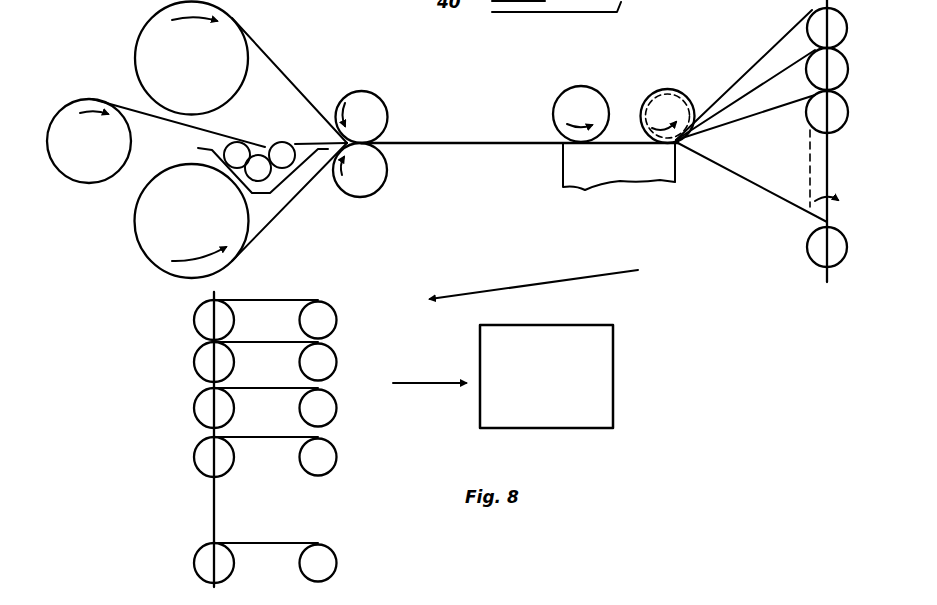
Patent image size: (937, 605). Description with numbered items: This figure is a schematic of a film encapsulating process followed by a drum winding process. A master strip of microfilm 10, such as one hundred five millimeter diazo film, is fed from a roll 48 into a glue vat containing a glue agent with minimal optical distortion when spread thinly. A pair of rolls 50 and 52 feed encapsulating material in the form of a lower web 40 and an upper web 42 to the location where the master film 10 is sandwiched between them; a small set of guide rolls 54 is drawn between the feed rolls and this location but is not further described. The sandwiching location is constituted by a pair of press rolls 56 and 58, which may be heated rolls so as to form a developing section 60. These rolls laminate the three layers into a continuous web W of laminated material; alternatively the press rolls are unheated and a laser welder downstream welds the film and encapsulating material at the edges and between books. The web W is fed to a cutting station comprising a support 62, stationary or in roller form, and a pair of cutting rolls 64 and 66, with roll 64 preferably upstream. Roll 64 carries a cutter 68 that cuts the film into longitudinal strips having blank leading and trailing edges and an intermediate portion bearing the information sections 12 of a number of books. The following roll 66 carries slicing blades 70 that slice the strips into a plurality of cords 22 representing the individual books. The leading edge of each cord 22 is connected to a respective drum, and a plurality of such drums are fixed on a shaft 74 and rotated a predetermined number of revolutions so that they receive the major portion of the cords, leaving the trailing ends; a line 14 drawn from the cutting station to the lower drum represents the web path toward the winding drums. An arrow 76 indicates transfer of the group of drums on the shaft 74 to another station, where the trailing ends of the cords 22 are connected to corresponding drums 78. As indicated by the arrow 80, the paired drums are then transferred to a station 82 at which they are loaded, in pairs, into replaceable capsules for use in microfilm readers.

The master strip of microfilm 10 is at (157, 120).
The information sections 12 is at (835, 28).
The web strand 14 is at (735, 173).
The cords 22 is at (752, 117).
The lower web 40 is at (263, 225).
The upper web 42 is at (263, 51).
The roll 48 is at (68, 118).
The roll 50 is at (147, 217).
The roll 52 is at (148, 42).
The guide rollers 54 is at (270, 143).
The press roll 56 is at (378, 180).
The press roll 58 is at (368, 98).
The developing section 60 is at (347, 202).
The support 62 is at (564, 170).
The cutting roll 64 is at (553, 112).
The cutting roll 66 is at (688, 94).
The cutter 68 is at (581, 87).
The slicing blades 70 is at (650, 90).
The shaft 74 is at (830, 165).
The transfer arrow 76 is at (528, 282).
The drums 78 is at (323, 322).
The arrow 80 is at (415, 385).
The station 82 is at (605, 349).
The continuous web W is at (425, 141).